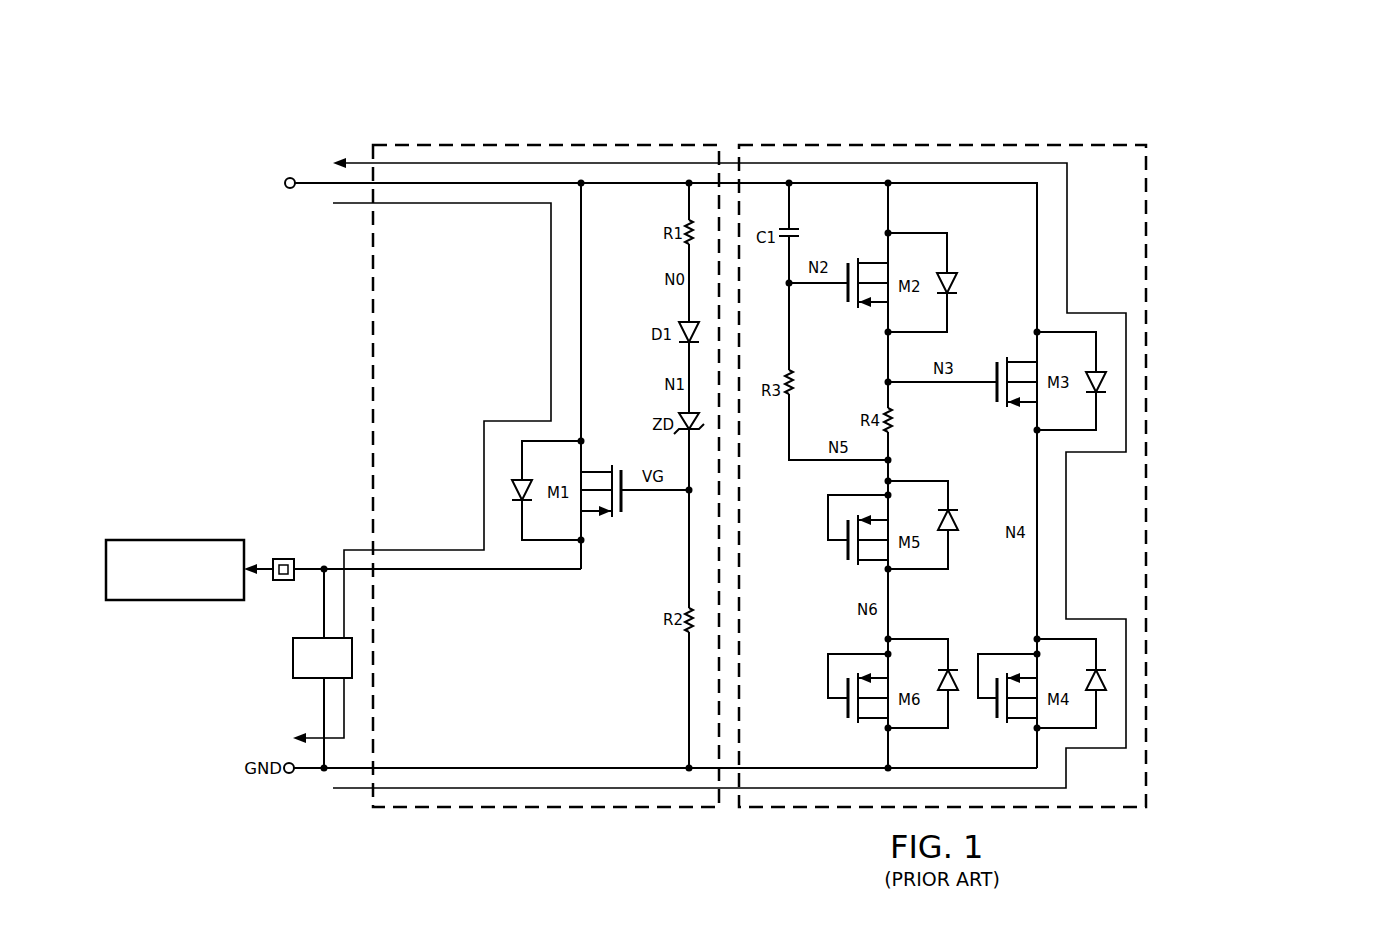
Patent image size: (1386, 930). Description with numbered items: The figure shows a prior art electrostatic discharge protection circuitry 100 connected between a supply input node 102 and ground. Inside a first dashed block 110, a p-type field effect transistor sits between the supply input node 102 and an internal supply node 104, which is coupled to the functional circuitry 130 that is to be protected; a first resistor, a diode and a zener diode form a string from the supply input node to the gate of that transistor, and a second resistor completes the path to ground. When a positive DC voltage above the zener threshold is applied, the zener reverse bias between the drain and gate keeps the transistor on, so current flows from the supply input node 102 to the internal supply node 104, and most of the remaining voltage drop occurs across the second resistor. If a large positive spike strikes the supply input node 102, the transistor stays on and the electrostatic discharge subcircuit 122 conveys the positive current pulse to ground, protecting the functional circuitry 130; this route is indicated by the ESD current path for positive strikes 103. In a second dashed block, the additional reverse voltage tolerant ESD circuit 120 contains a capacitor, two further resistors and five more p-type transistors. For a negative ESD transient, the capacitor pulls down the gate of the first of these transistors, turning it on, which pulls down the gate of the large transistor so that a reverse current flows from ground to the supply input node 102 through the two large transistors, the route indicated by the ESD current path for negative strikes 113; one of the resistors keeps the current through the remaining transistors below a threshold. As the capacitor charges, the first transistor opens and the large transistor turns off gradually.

The ESD circuitry 100 is at (218, 337).
The VDDPIN input node 102 is at (290, 177).
The ESD current path for positive strikes 103 is at (551, 352).
The VDDINT node 104 is at (282, 557).
The first ESD protection circuit block 110 is at (519, 138).
The ESD current path for negative strikes 113 is at (1127, 356).
The additional reverse voltage tolerant ESD circuit 120 is at (959, 138).
The electrostatic discharge subcircuit ESD1 122 is at (292, 660).
The functional circuitry 130 is at (176, 601).